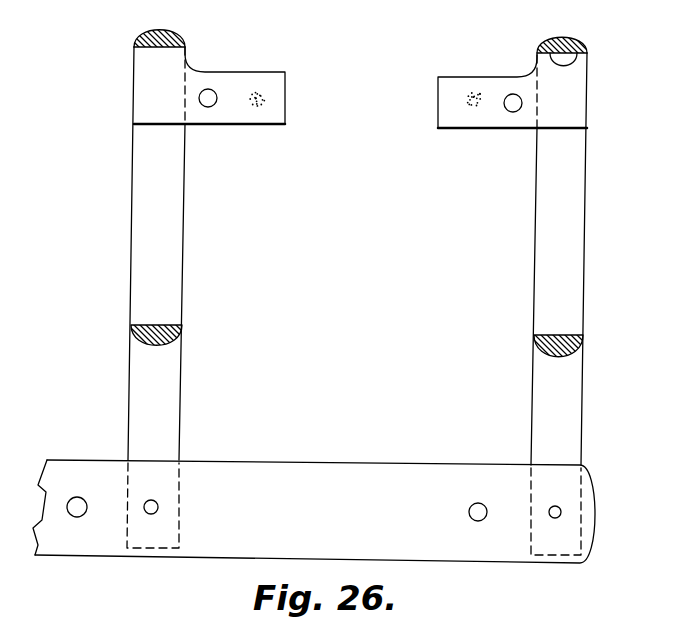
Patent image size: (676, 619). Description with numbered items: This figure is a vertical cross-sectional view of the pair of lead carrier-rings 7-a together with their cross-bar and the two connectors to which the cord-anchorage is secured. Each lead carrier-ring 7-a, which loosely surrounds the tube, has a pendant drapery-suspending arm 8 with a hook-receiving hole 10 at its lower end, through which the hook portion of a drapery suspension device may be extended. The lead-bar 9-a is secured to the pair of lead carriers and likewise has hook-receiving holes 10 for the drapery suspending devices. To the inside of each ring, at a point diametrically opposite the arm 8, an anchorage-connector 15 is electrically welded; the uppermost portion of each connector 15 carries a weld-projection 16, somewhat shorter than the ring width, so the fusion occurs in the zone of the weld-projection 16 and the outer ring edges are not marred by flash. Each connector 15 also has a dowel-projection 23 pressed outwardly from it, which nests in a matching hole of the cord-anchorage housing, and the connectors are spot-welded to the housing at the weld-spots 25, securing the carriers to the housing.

The lead carrier-ring 7-a is at (176, 228).
The drapery-suspending arm 8 is at (163, 404).
The lead-bar 9-a is at (367, 450).
The hook-receiving hole 10 is at (477, 503).
The anchorage-connector 15 is at (232, 78).
The weld-projection 16 is at (562, 64).
The dowel-projection 23 is at (513, 109).
The weld-spot 25 is at (265, 100).